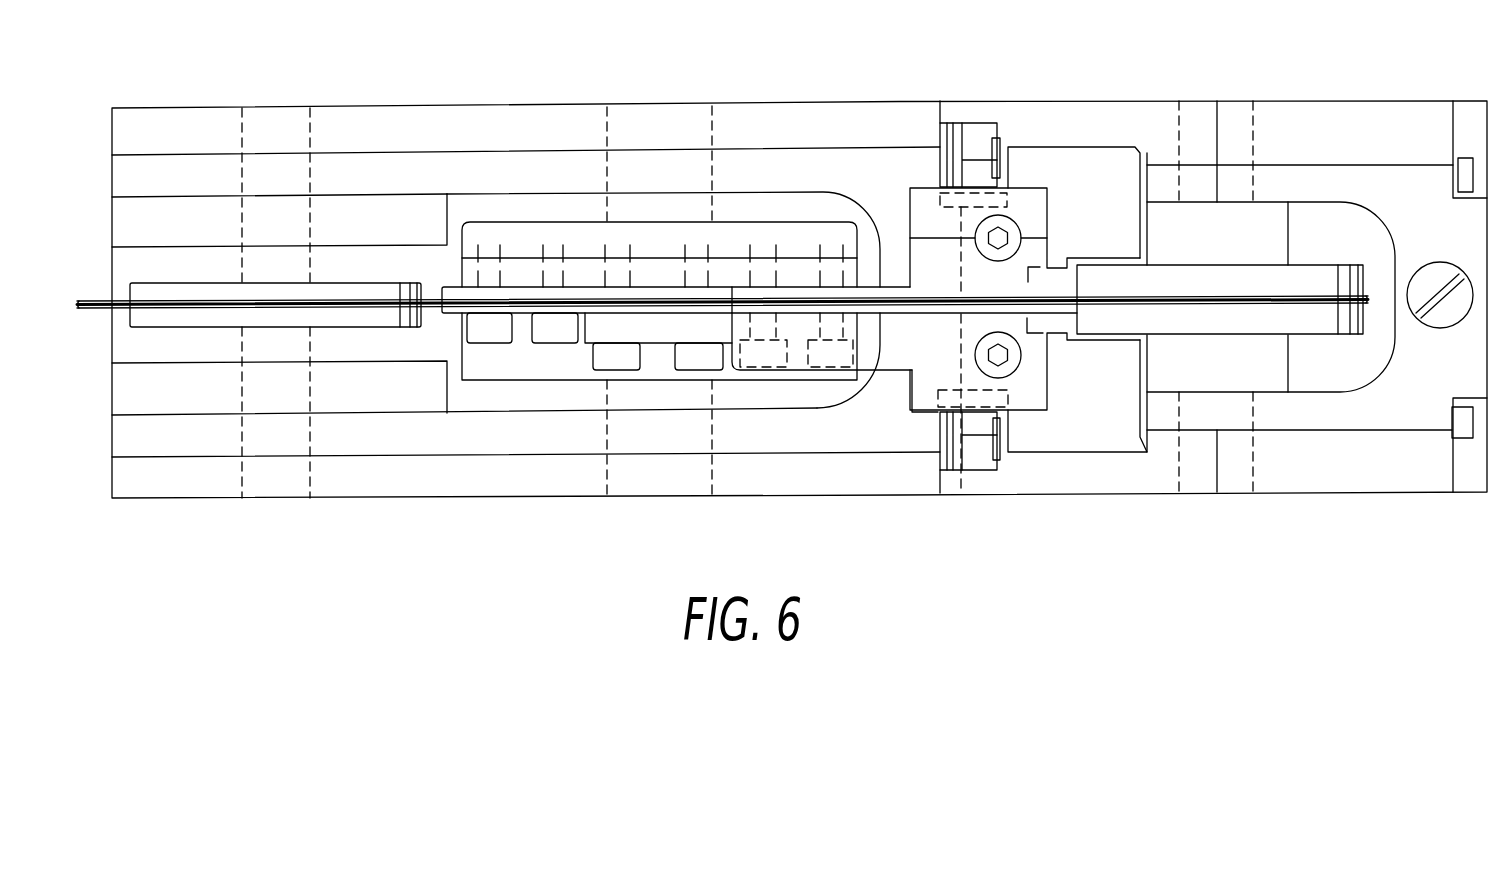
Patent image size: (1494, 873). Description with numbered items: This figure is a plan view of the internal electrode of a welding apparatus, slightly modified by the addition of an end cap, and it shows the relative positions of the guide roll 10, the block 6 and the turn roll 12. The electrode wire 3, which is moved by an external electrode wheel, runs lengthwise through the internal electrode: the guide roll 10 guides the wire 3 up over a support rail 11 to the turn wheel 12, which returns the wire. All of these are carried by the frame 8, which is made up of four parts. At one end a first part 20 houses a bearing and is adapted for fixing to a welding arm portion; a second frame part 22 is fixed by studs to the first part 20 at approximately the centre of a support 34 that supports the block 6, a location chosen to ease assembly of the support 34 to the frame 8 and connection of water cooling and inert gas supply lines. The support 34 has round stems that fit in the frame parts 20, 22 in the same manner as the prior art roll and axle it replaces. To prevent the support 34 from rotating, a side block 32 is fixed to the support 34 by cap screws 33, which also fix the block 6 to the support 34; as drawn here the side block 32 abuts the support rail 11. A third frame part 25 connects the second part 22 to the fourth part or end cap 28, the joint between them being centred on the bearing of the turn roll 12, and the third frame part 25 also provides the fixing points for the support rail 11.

The electrode wire 3 is at (428, 300).
The block 6 is at (582, 286).
The frame 8 is at (761, 94).
The guide roll 10 is at (191, 320).
The support rail 11 is at (893, 286).
The turn wheel 12 is at (1313, 275).
The first frame part 20 is at (147, 122).
The second frame part 22 is at (838, 482).
The third frame part 25 is at (1122, 478).
The end cap 28 is at (1340, 478).
The side block 32 is at (664, 334).
The cap screws 33 is at (624, 362).
The support 34 is at (793, 224).